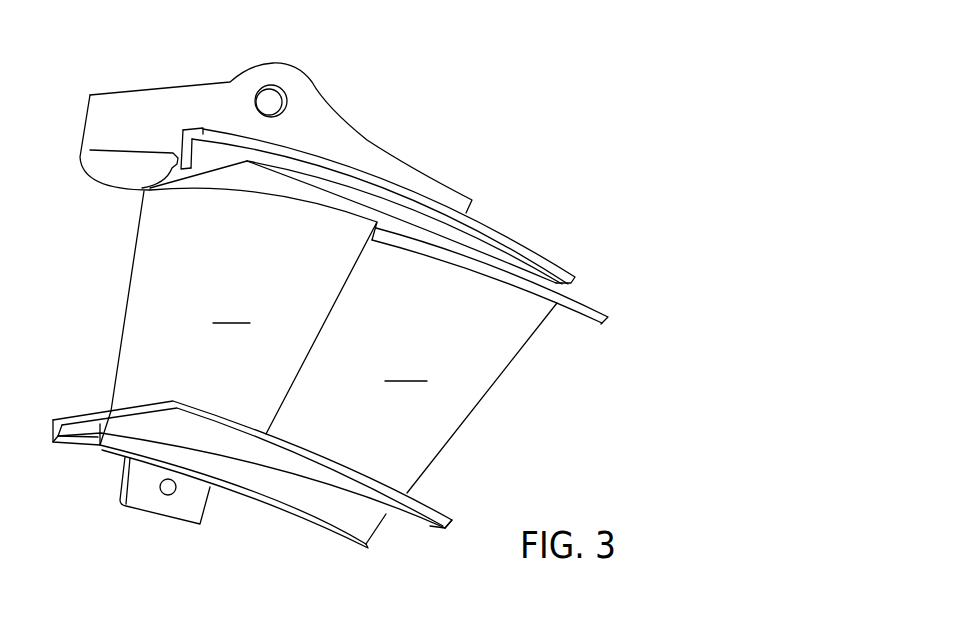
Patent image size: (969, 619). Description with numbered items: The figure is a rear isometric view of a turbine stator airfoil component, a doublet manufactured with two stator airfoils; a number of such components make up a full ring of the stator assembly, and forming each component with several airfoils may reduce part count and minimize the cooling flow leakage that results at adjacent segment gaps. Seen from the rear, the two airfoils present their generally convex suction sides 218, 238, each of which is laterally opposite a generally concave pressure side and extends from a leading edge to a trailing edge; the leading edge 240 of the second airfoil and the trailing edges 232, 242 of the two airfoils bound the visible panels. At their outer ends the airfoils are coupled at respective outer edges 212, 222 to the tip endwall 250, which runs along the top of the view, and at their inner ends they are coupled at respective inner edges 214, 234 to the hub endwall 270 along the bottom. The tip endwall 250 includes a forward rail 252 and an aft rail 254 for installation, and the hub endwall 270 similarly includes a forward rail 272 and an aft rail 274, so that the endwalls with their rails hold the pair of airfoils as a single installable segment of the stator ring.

The outer edge 212 is at (462, 268).
The inner edge 214 is at (322, 458).
The suction side 218 is at (313, 303).
The outer edge 222 is at (252, 194).
The trailing edge 232 is at (491, 388).
The inner edge 234 is at (155, 400).
The suction side 238 is at (500, 360).
The leading edge 240 is at (135, 245).
The trailing edge 242 is at (336, 304).
The tip endwall 250 is at (596, 306).
The forward rail 252 is at (152, 93).
The aft rail 254 is at (503, 229).
The hub endwall 270 is at (418, 522).
The forward rail 272 is at (157, 516).
The aft rail 274 is at (282, 510).